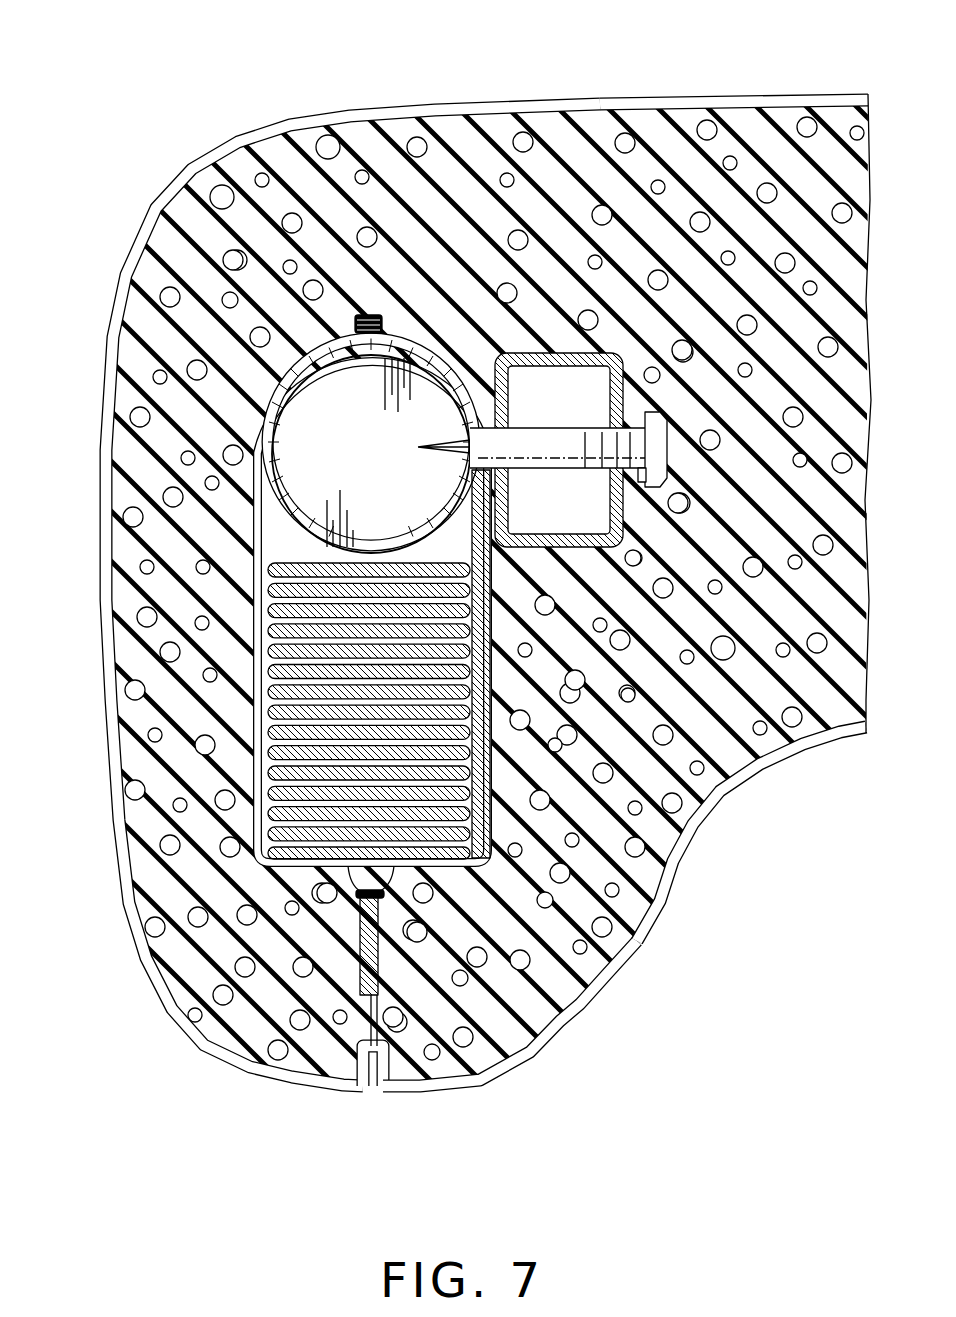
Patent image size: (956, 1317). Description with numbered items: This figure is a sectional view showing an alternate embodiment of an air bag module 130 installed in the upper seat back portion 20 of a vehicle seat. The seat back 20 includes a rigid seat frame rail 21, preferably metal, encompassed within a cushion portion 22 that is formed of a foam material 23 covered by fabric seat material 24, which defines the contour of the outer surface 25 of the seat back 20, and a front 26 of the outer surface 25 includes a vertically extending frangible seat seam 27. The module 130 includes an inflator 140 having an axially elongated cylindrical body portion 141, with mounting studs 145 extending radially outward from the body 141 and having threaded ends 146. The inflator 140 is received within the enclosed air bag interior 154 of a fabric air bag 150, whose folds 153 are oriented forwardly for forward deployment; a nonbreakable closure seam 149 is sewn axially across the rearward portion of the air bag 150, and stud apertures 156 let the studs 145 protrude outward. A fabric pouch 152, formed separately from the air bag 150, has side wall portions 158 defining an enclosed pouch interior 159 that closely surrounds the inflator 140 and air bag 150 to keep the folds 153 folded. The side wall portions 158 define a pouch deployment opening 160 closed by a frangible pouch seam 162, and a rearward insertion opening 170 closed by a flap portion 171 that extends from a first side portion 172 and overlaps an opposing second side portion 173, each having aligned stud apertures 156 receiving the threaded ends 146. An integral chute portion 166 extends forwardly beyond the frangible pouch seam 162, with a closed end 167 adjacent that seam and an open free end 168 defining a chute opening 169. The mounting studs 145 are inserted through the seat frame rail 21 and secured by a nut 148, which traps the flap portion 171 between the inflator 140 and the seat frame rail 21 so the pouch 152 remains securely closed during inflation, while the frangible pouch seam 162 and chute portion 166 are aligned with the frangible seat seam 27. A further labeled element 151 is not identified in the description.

The upper seat back portion 20 is at (410, 90).
The seat frame rail 21 is at (566, 353).
The cushion portion 22 is at (491, 92).
The foam material 23 is at (588, 160).
The fabric seat material 24 is at (763, 96).
The outer surface 25 is at (604, 1032).
The front 26 is at (548, 1050).
The frangible seat seam 27 is at (373, 1090).
The air bag module 130 is at (246, 416).
The inflator 140 is at (277, 450).
The body portion 141 is at (293, 476).
The mounting studs 145 is at (564, 422).
The threaded ends 146 is at (662, 436).
The nut 148 is at (646, 478).
The closure seam 149 is at (330, 325).
The air bag 150 is at (256, 518).
The liner 151 is at (290, 545).
The fabric pouch 152 is at (250, 373).
The folds 153 is at (258, 652).
The air bag interior 154 is at (480, 560).
The stud apertures 156 is at (507, 448).
The side wall portions 158 is at (262, 722).
The pouch interior 159 is at (312, 348).
The pouch deployment opening 160 is at (352, 896).
The frangible pouch seam 162 is at (320, 905).
The chute portion 166 is at (351, 972).
The closed end 167 is at (357, 1000).
The free end 168 is at (367, 1000).
The chute opening 169 is at (397, 1062).
The insertion opening 170 is at (282, 378).
The flap portion 171 is at (386, 312).
The first side portion 172 is at (305, 562).
The second side portion 173 is at (500, 805).